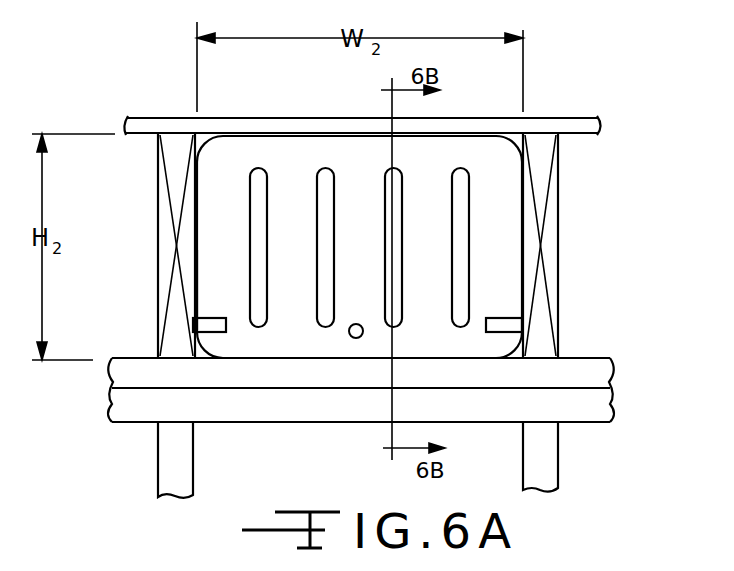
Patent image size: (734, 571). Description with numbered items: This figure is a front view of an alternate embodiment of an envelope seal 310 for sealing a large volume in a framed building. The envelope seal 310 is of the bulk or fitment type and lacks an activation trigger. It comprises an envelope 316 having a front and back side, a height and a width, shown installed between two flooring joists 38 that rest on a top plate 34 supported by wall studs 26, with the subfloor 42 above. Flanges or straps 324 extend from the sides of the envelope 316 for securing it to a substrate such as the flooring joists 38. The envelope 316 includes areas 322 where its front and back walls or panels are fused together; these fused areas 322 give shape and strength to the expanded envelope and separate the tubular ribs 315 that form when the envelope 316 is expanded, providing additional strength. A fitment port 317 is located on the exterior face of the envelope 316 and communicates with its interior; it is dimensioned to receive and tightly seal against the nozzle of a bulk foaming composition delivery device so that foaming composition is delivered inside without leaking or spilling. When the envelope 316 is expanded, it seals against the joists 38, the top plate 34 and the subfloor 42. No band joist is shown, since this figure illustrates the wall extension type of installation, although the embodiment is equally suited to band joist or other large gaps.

The wall studs 26 is at (193, 440).
The top plate 34 is at (600, 372).
The flooring joists 38 is at (167, 225).
The subfloor 42 is at (575, 120).
The envelope seal 310 is at (378, 264).
The tubular ribs 315 is at (358, 173).
The envelope 316 is at (288, 167).
The fitment port 317 is at (351, 339).
The fused areas 322 is at (247, 198).
The flanges or straps 324 is at (203, 327).